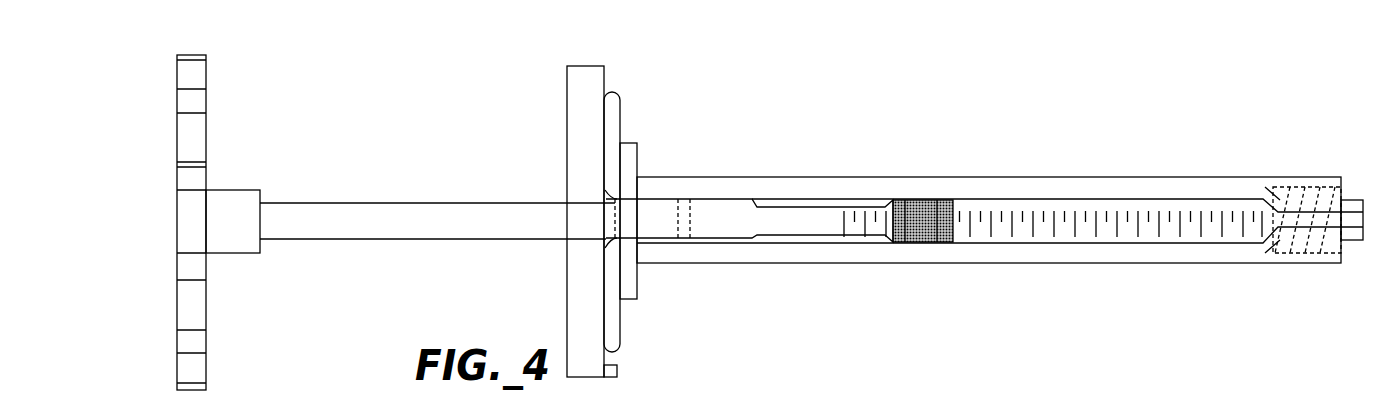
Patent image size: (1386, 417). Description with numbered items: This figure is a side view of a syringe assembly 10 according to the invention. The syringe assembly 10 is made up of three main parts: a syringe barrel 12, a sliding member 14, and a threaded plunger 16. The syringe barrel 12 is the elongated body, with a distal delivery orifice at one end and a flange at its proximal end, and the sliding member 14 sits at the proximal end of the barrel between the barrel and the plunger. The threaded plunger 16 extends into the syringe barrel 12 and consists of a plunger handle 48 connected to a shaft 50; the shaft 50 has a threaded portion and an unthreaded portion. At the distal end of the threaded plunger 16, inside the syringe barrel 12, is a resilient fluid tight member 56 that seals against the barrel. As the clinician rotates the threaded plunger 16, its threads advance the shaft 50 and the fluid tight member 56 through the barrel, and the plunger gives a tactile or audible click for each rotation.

The syringe assembly 10 is at (1000, 236).
The syringe barrel 12 is at (1048, 177).
The sliding member 14 is at (580, 66).
The threaded plunger 16 is at (549, 226).
The plunger handle 48 is at (188, 56).
The shaft 50 is at (372, 240).
The resilient fluid tight member 56 is at (920, 205).